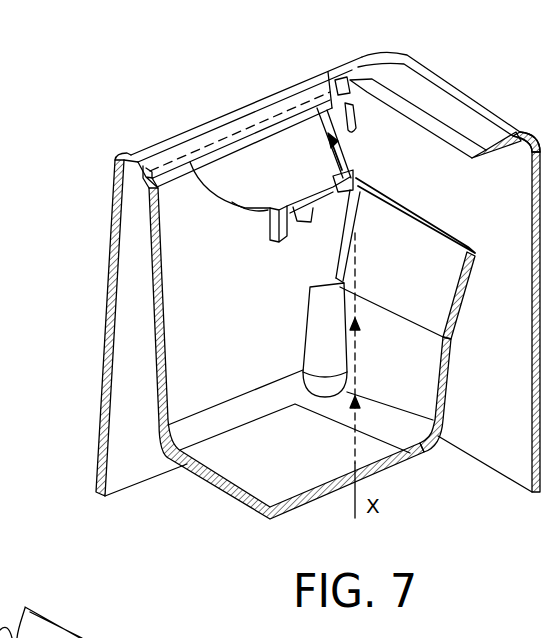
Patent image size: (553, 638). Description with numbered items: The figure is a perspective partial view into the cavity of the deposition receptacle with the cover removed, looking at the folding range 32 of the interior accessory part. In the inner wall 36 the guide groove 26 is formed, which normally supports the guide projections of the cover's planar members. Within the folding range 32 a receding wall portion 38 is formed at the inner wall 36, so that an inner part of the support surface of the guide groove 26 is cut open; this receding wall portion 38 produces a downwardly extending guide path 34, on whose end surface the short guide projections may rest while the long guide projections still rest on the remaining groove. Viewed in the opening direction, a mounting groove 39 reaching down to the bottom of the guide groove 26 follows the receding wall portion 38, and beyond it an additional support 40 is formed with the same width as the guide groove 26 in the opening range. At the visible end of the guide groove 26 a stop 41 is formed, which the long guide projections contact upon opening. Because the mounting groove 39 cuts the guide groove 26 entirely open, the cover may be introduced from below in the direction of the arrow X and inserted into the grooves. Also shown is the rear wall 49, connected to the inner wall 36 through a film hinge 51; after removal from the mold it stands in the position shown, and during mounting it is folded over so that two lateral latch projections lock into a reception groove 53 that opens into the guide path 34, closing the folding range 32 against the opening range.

The guide groove 26 is at (146, 173).
The folding range 32 is at (227, 93).
The guide path 34 is at (253, 212).
The inner wall 36 is at (226, 368).
The receding wall portion 38 is at (265, 190).
The mounting groove 39 is at (310, 115).
The additional support 40 is at (348, 118).
The stop 41 is at (337, 95).
The rear wall 49 is at (436, 273).
The film hinge 51 is at (450, 348).
The reception groove 53 is at (279, 243).